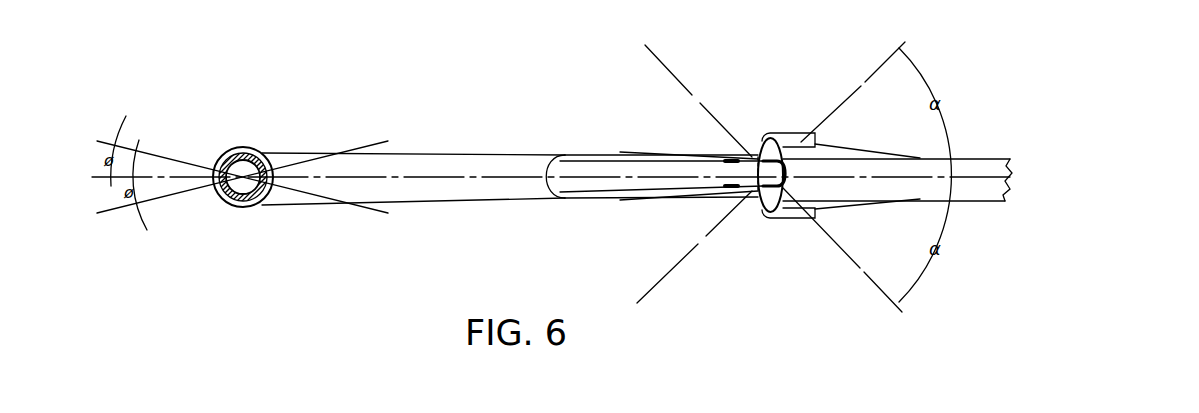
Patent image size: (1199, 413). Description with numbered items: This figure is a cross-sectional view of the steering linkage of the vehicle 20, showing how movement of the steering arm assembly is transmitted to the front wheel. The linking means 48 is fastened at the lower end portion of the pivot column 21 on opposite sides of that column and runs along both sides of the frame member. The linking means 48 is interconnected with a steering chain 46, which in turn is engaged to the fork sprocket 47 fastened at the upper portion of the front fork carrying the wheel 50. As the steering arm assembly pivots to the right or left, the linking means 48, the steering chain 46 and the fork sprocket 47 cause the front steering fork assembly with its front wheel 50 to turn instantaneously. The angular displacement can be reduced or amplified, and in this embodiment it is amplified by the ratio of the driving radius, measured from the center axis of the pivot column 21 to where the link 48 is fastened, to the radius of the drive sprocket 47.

The light coupling assembly 20 is at (494, 74).
The pivot column 21 is at (218, 158).
The steering chain 46 is at (740, 192).
The fork sprocket 47 is at (747, 152).
The linking means 48 is at (503, 155).
The front wheel 50 is at (972, 160).